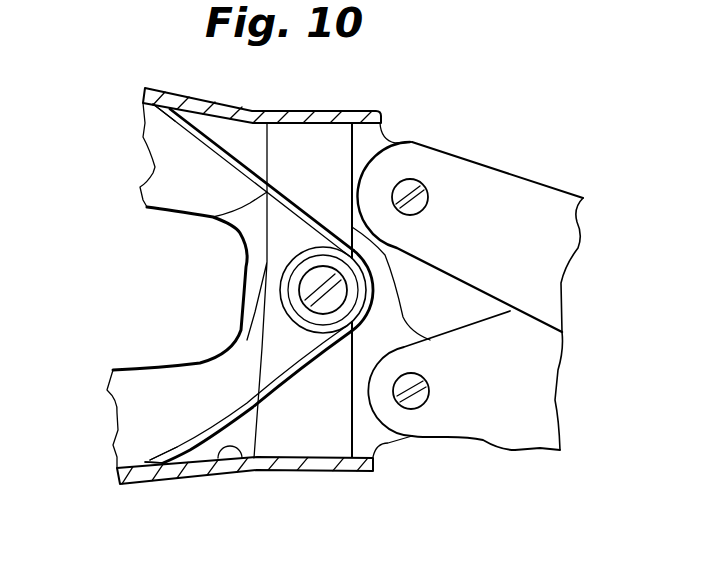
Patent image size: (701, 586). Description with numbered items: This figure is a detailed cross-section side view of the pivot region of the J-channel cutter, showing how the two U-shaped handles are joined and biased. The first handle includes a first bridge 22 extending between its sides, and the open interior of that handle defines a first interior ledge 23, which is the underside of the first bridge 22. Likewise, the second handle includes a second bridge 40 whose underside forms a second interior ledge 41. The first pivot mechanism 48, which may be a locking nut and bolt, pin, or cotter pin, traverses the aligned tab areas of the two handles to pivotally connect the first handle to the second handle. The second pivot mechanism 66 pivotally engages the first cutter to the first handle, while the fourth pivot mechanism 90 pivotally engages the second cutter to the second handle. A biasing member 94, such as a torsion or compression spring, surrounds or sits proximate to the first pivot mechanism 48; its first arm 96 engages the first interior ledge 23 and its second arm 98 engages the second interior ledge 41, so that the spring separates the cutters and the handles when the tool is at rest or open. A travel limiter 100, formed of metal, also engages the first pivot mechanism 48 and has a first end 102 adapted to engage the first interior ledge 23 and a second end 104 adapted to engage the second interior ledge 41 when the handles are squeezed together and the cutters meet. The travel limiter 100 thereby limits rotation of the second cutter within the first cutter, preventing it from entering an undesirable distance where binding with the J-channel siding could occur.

The first bridge 22 is at (212, 466).
The first interior ledge 23 is at (236, 452).
The second bridge 40 is at (247, 118).
The second interior ledge 41 is at (211, 124).
The first pivot mechanism 48 is at (312, 292).
The second pivot mechanism 66 is at (412, 400).
The fourth pivot mechanism 90 is at (417, 190).
The biasing member 94 is at (263, 200).
The first arm 96 is at (165, 460).
The second arm 98 is at (173, 117).
The travel limiter 100 is at (326, 429).
The first end 102 is at (318, 452).
The second end 104 is at (337, 139).